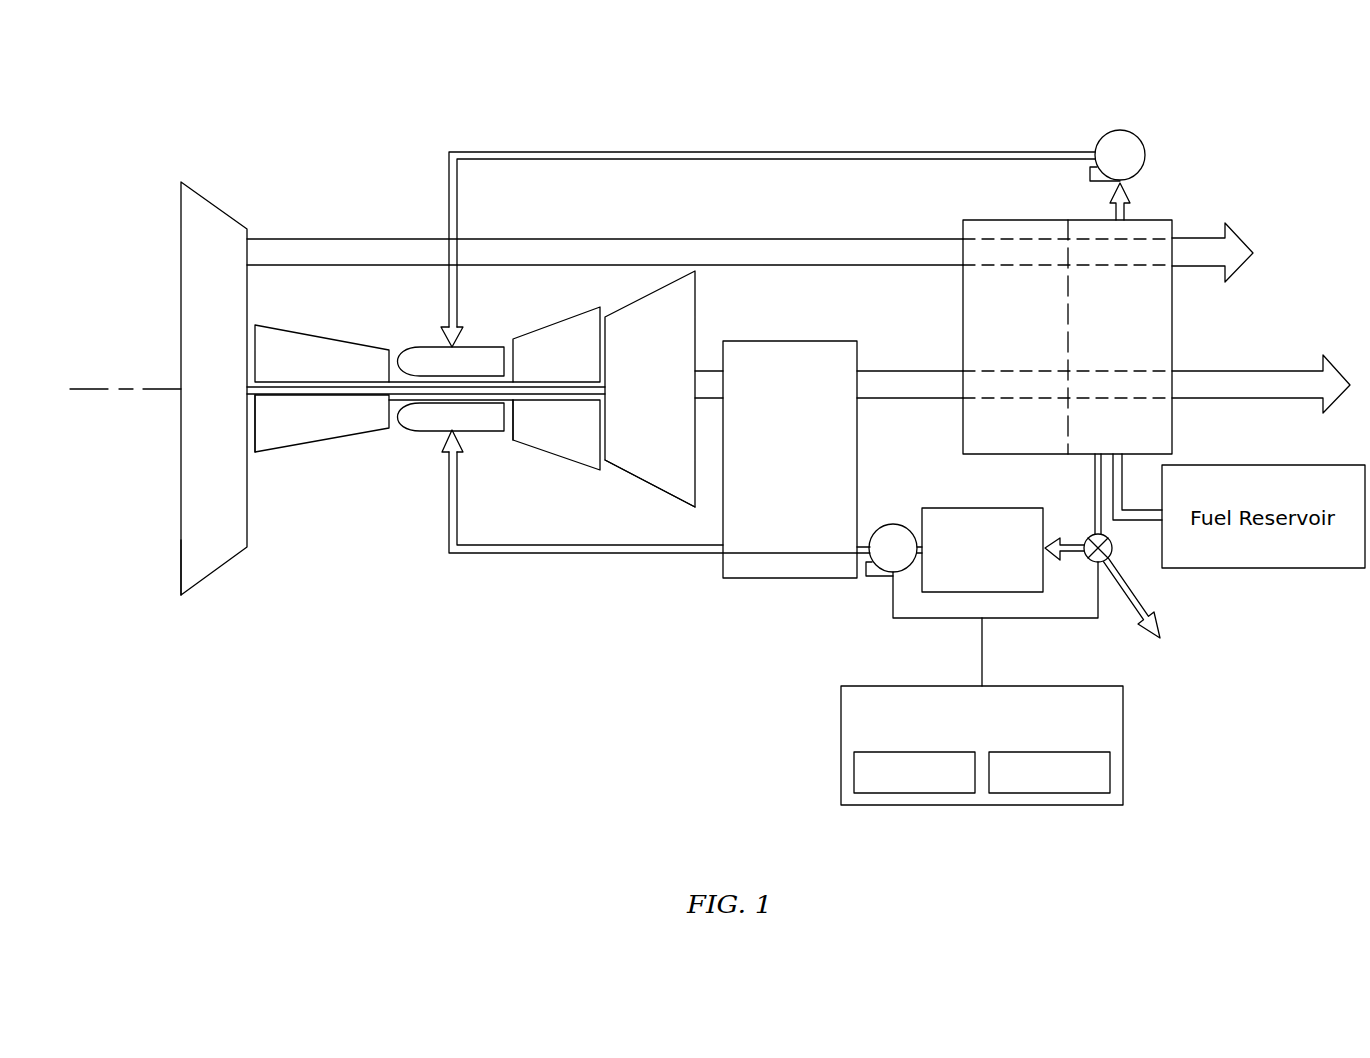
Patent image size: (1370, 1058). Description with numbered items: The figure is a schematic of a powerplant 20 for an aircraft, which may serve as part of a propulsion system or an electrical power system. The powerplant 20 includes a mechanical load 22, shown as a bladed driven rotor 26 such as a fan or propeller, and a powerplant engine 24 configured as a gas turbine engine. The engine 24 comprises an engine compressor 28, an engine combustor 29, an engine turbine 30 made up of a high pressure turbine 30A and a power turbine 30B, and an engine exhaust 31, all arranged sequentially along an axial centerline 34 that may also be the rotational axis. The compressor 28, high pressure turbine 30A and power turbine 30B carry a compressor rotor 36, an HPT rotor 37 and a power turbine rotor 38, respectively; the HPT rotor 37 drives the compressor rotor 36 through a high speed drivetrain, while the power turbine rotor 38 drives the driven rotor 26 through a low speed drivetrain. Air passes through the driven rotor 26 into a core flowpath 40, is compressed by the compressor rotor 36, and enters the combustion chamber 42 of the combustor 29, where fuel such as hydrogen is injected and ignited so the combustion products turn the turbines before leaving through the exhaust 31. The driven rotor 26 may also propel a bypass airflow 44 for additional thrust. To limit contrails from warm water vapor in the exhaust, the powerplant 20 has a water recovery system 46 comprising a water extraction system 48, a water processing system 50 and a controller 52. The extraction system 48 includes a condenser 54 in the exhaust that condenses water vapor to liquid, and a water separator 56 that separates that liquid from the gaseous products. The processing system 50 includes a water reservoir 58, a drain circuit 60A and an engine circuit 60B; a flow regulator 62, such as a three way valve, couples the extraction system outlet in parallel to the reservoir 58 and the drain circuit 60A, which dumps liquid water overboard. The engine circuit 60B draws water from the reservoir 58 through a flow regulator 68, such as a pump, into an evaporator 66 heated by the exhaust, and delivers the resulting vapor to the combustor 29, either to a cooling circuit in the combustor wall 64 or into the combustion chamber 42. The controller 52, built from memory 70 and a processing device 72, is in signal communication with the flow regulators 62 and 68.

The powerplant 20 is at (166, 101).
The mechanical load 22 is at (206, 185).
The powerplant engine 24 is at (350, 482).
The driven rotor 26 is at (181, 552).
The engine compressor 28 is at (324, 330).
The engine combustor 29 is at (480, 333).
The engine turbine 30 is at (604, 349).
The high pressure turbine 30A is at (545, 311).
The power turbine 30B is at (645, 288).
The engine exhaust 31 is at (966, 195).
The axial centerline 34 is at (83, 389).
The compressor rotor 36 is at (255, 425).
The HPT rotor 37 is at (510, 432).
The power turbine rotor 38 is at (657, 490).
The core flowpath 40 is at (913, 370).
The combustion chamber 42 is at (425, 356).
The bypass airflow 44 is at (900, 238).
The water recovery system 46 is at (720, 715).
The water extraction system 48 is at (1177, 206).
The water processing system 50 is at (748, 632).
The controller 52 is at (987, 746).
The condenser 54 is at (963, 299).
The water separator 56 is at (1172, 303).
The water reservoir 58 is at (942, 592).
The drain circuit 60A is at (1142, 593).
The engine circuit 60B is at (622, 564).
The flow regulator 62 is at (1090, 535).
The combustor wall 64 is at (485, 431).
The evaporator 66 is at (803, 527).
The flow regulator 68 is at (893, 523).
The memory 70 is at (1110, 770).
The processing device 72 is at (854, 770).